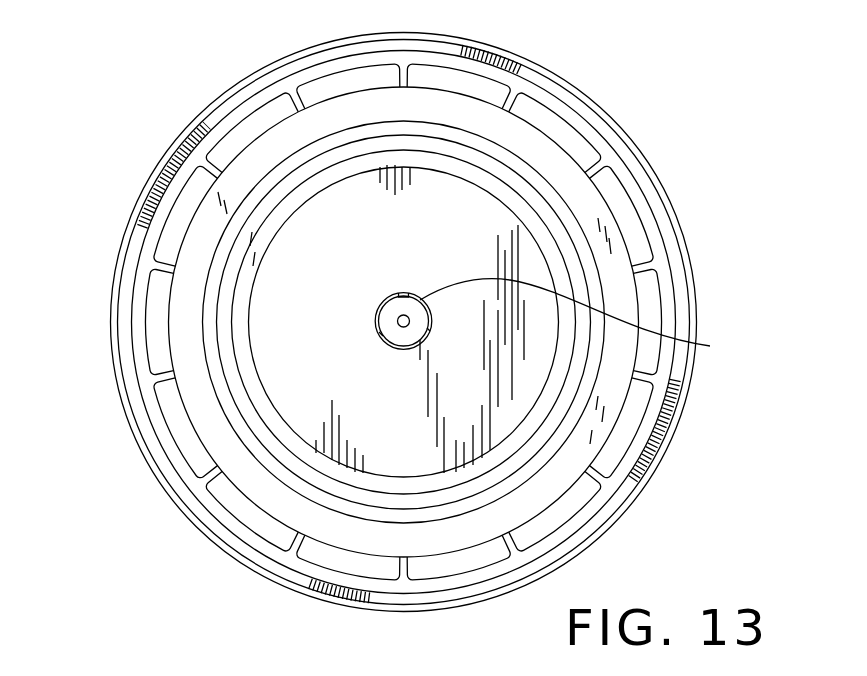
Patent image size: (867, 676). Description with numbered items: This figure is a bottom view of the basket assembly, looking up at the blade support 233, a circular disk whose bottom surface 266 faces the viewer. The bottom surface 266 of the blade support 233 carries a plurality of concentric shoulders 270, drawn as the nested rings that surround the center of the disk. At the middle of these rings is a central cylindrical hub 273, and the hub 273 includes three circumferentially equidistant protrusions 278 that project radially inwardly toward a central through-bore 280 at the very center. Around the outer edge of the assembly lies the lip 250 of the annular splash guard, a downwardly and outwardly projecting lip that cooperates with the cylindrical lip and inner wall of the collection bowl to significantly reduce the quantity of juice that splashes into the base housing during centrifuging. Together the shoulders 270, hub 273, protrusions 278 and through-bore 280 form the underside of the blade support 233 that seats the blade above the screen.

The blade support 233 is at (307, 227).
The lip 250 is at (598, 412).
The bottom surface 266 is at (423, 244).
The concentric shoulders 270 is at (507, 162).
The central cylindrical hub 273 is at (589, 321).
The protrusions 278 is at (378, 335).
The central through-bore 280 is at (398, 320).